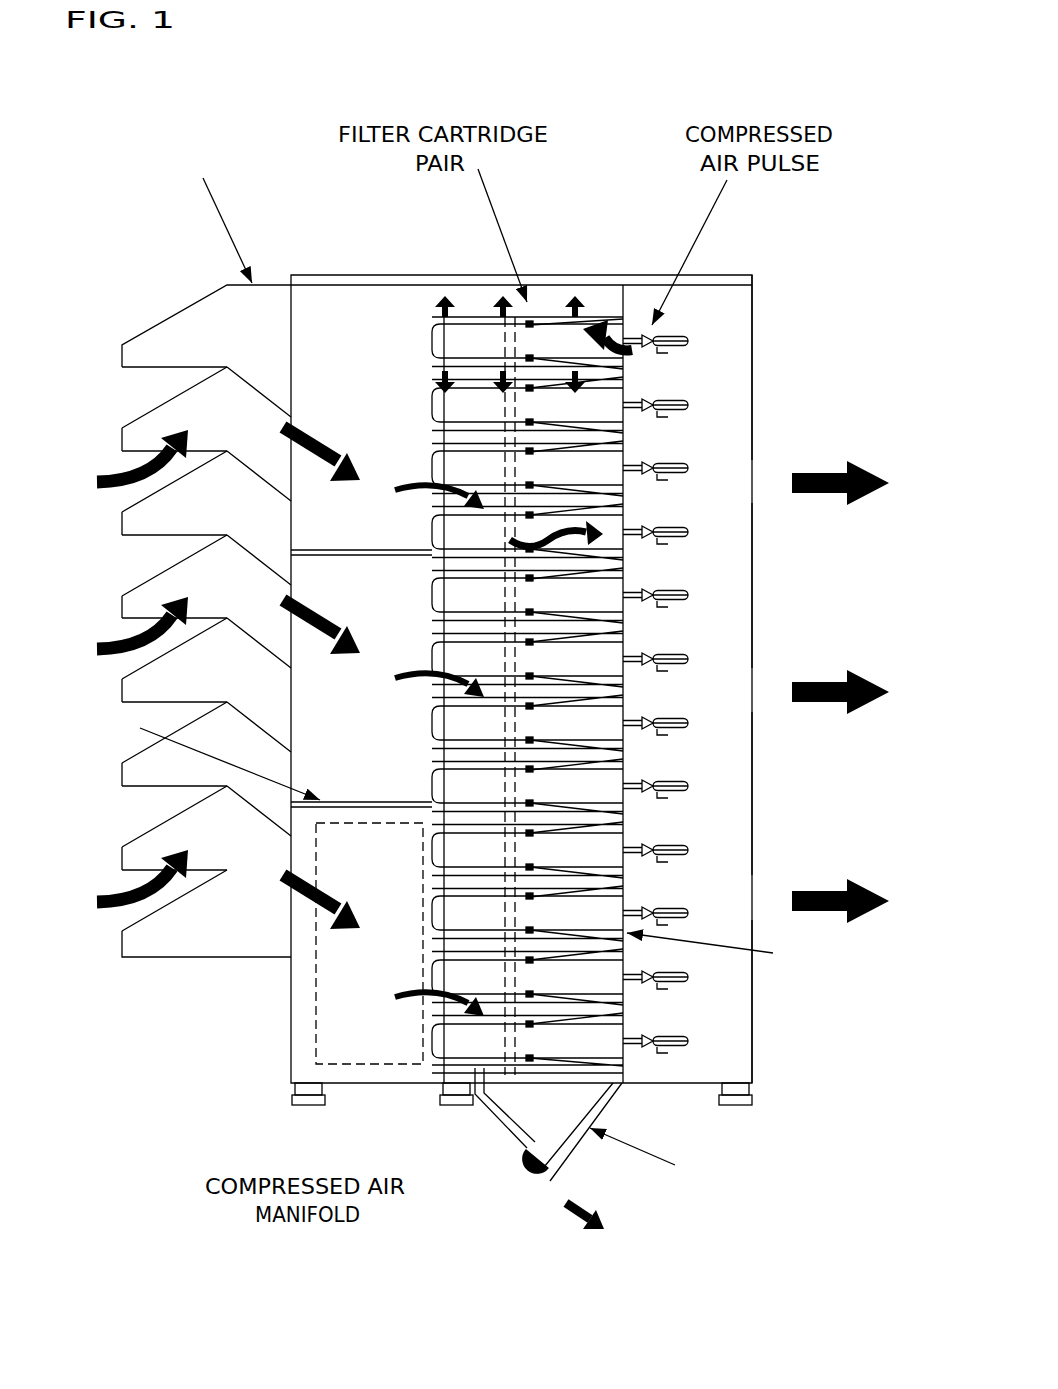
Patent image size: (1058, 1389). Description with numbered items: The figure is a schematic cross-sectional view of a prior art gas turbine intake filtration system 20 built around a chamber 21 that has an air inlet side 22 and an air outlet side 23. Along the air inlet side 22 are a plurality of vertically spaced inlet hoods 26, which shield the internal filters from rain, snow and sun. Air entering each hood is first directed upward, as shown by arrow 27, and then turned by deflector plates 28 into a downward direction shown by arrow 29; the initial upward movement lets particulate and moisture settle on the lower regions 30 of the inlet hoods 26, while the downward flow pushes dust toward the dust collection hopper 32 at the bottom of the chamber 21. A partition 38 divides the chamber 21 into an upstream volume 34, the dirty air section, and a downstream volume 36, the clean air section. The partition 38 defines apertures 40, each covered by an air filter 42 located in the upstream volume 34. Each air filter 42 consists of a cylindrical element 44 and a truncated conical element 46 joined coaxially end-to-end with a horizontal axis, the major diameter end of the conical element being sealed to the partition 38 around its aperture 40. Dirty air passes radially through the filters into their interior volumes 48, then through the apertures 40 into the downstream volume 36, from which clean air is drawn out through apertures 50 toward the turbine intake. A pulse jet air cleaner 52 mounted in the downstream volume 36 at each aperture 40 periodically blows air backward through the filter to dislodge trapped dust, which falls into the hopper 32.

The system 20 is at (521, 594).
The chamber 21 is at (377, 275).
The air inlet side 22 is at (164, 552).
The air outlet side 23 is at (753, 390).
The inlet hoods 26 is at (120, 432).
The arrow 27 is at (97, 472).
The deflector plates 28 is at (255, 375).
The arrow 29 is at (325, 437).
The lower regions 30 is at (132, 502).
The dust collection hopper 32 is at (563, 1162).
The upstream volume 34 is at (258, 700).
The downstream volume 36 is at (794, 679).
The partition 38 is at (623, 295).
The apertures 40 is at (625, 453).
The air filter 42 is at (433, 323).
The cylindrical element 44 is at (473, 317).
The truncated conical element 46 is at (552, 318).
The interior volumes 48 is at (490, 543).
The apertures 50 is at (752, 460).
The pulse jet air cleaner 52 is at (685, 527).